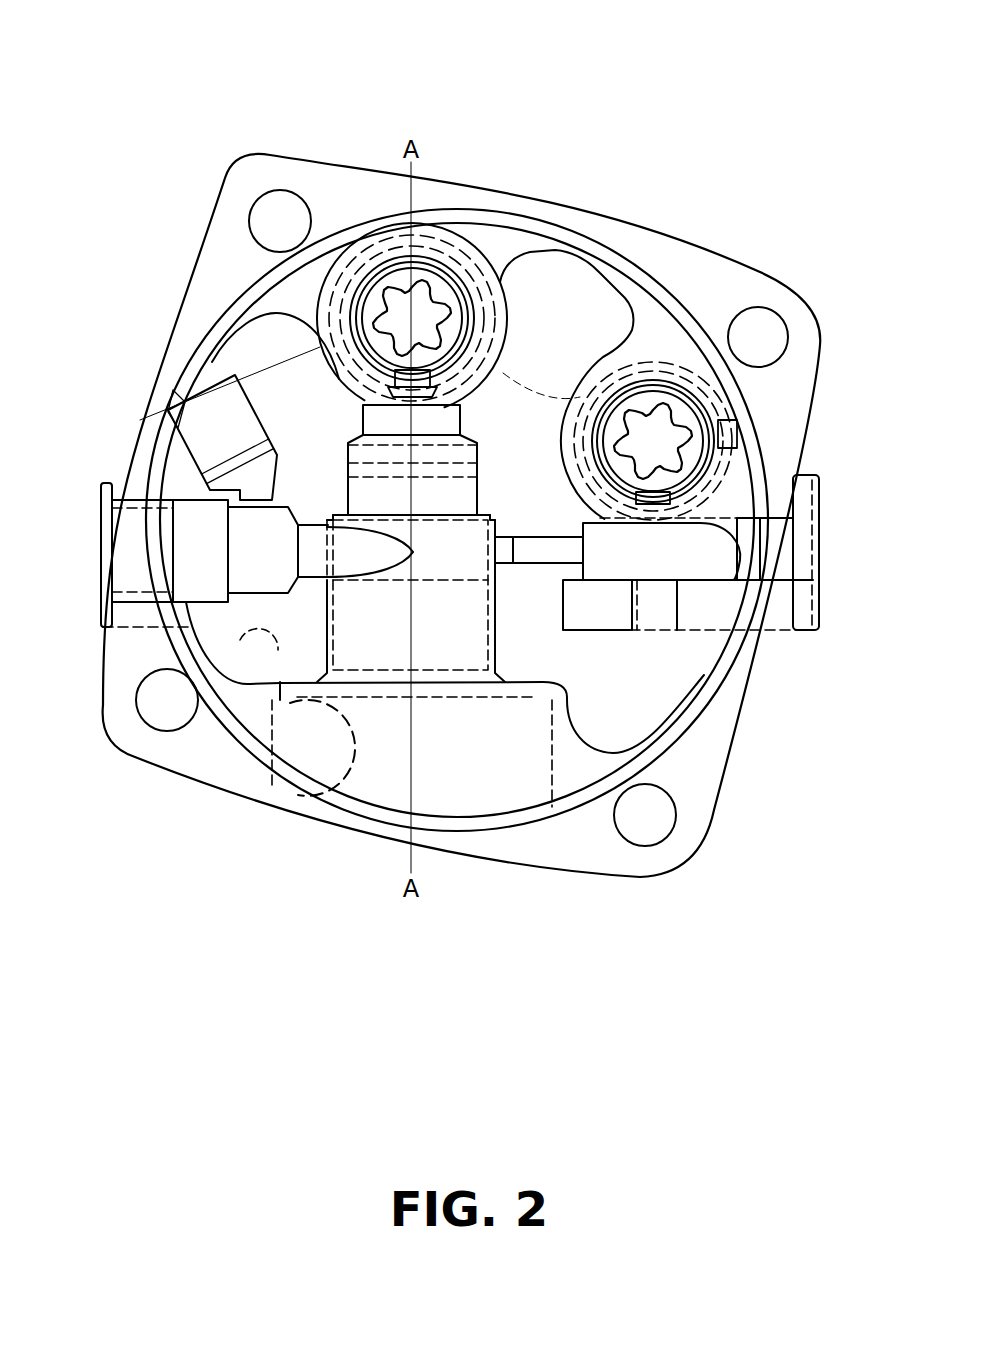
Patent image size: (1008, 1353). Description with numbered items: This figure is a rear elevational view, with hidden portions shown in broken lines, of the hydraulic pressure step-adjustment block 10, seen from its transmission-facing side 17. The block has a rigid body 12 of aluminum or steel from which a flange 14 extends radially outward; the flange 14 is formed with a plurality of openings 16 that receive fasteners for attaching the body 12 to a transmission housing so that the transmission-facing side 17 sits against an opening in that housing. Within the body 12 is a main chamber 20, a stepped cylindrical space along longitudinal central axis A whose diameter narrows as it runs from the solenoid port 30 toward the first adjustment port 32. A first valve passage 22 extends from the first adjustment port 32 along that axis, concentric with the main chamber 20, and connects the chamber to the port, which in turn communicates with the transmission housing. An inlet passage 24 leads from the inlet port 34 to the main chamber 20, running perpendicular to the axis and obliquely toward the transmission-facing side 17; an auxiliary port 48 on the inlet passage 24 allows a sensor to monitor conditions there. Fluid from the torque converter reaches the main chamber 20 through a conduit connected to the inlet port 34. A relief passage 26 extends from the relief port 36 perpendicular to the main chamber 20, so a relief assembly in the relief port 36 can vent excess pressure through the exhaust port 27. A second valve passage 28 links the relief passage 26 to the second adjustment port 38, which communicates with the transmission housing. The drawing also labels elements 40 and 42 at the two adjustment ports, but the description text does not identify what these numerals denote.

The hydraulic pressure step-adjustment block 10 is at (582, 118).
The body 12 is at (673, 235).
The flange 14 is at (700, 243).
The openings 16 is at (287, 192).
The transmission-facing side 17 is at (727, 277).
The main chamber 20 is at (328, 627).
The first valve passage 22 is at (380, 381).
The inlet passage 24 is at (328, 578).
The relief passage 26 is at (562, 580).
The exhaust port 27 is at (680, 593).
The second valve passage 28 is at (672, 503).
The solenoid port 30 is at (313, 795).
The first adjustment port 32 is at (470, 297).
The inlet port 34 is at (117, 505).
The relief port 36 is at (805, 545).
The second adjustment port 38 is at (712, 476).
The O-ring 40 is at (462, 293).
The fastener 42 is at (400, 282).
The auxiliary port 48 is at (178, 393).